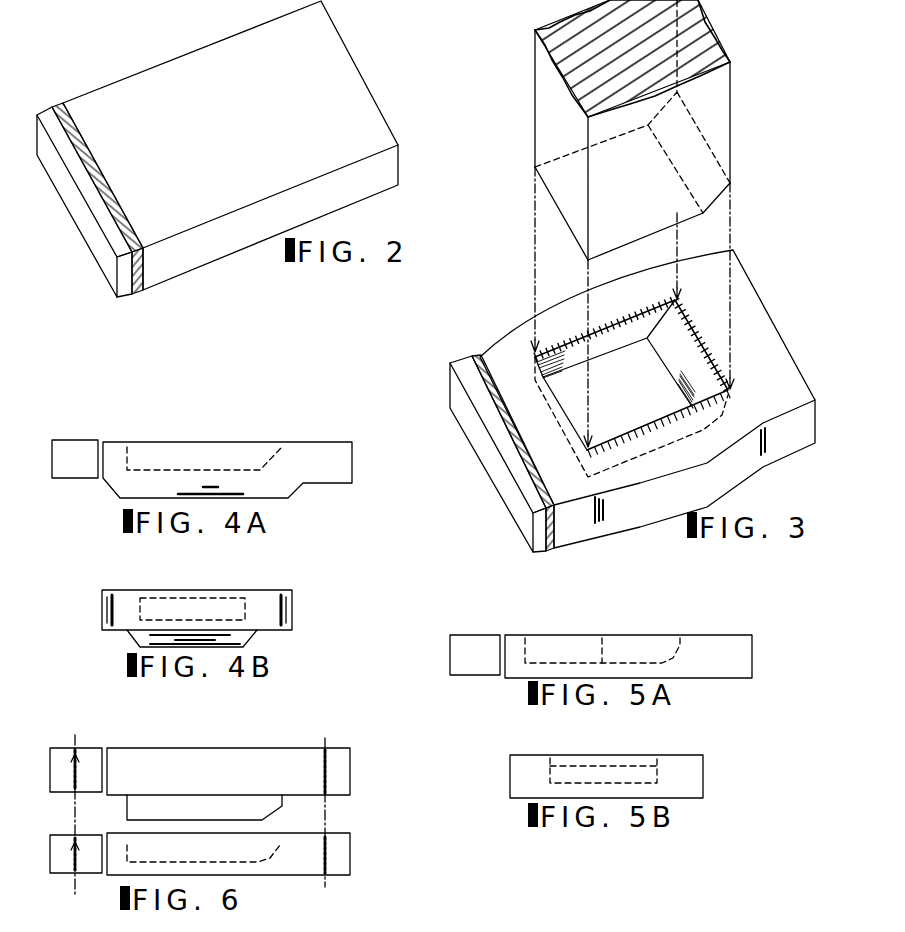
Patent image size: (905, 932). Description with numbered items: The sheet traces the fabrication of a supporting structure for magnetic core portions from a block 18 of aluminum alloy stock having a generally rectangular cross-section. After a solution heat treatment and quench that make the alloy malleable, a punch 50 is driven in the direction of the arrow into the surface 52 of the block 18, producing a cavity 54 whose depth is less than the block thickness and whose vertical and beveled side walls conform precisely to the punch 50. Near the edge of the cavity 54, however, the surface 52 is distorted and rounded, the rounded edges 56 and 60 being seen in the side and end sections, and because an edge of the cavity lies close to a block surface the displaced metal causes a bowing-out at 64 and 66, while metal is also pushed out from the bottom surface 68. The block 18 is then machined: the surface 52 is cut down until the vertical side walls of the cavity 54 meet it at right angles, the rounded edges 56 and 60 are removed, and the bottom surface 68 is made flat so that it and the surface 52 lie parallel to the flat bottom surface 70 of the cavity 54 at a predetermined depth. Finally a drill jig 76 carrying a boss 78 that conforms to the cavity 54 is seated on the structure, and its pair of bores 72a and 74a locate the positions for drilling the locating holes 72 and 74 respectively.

In FIG. 2, the block 18 is at (320, 27).
In FIG. 3, the block 18 is at (760, 300).
In FIG. 4A, the block 18 is at (317, 453).
In FIG. 4B, the block 18 is at (125, 597).
In FIG. 5A, the block 18 is at (745, 652).
In FIG. 5B, the block 18 is at (697, 775).
In FIG. 6, the block 18 is at (355, 870).
In FIG. 3, the punch 50 is at (730, 97).
In FIG. 3, the surface 52 is at (508, 360).
In FIG. 5A, the surface 52 is at (513, 636).
In FIG. 3, the cavity 54 is at (633, 357).
In FIG. 5A, the cavity 54 is at (530, 653).
In FIG. 5B, the cavity 54 is at (592, 780).
In FIG. 6, the cavity 54 is at (127, 852).
In FIG. 4A, the rounded edge 56 is at (277, 447).
In FIG. 4B, the rounded edge 60 is at (213, 593).
In FIG. 3, the bowing-out 64 is at (625, 277).
In FIG. 4B, the bowing-out 64 is at (102, 608).
In FIG. 3, the bowing-out 66 is at (707, 478).
In FIG. 4B, the bowing-out 66 is at (293, 608).
In FIG. 4A, the bottom surface 68 is at (327, 483).
In FIG. 4B, the bottom surface 68 is at (272, 635).
In FIG. 5A, the bottom surface 68 is at (507, 678).
In FIG. 5A, the flat bottom surface 70 is at (602, 638).
In FIG. 6, the locating hole 72 is at (63, 877).
In FIG. 6, the bore 72a is at (65, 748).
In FIG. 6, the locating hole 74 is at (325, 845).
In FIG. 6, the bore 74a is at (325, 757).
In FIG. 6, the drill jig 76 is at (205, 748).
In FIG. 6, the boss 78 is at (272, 811).